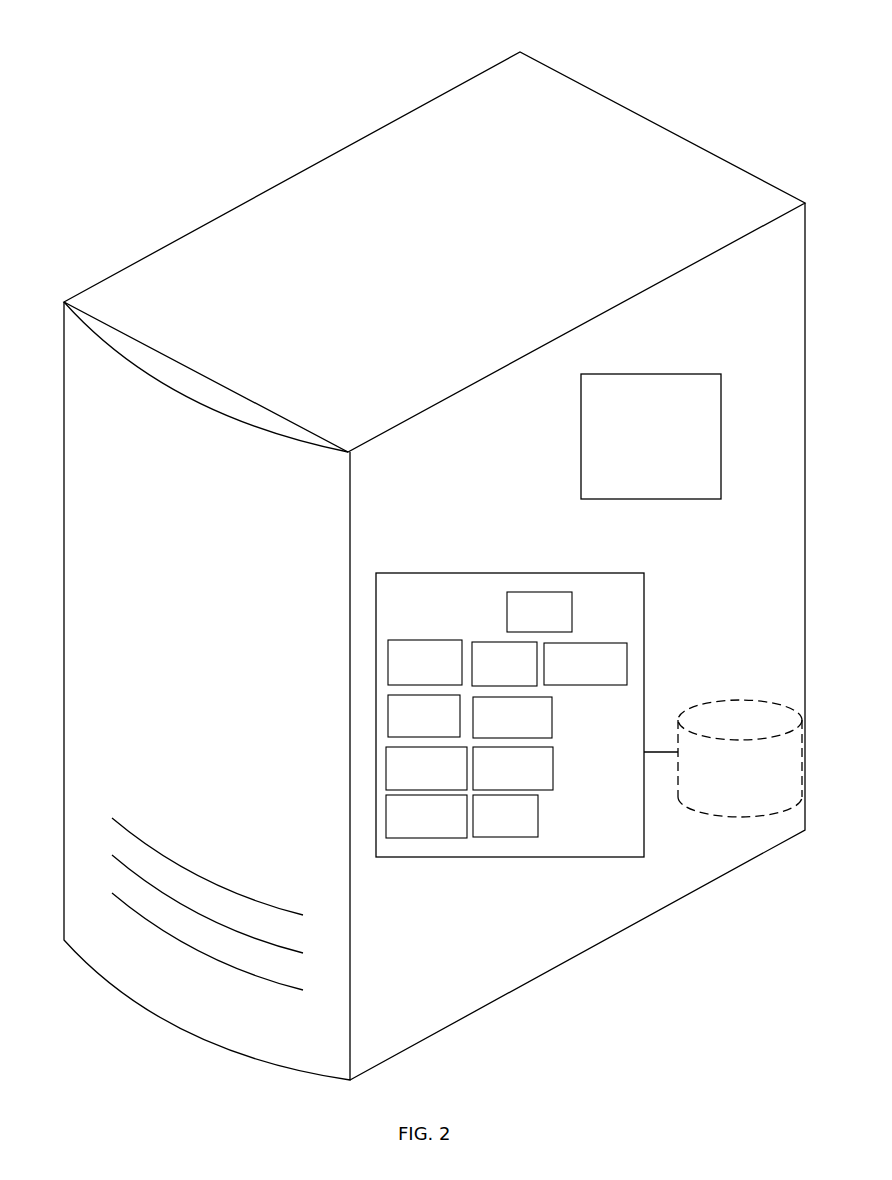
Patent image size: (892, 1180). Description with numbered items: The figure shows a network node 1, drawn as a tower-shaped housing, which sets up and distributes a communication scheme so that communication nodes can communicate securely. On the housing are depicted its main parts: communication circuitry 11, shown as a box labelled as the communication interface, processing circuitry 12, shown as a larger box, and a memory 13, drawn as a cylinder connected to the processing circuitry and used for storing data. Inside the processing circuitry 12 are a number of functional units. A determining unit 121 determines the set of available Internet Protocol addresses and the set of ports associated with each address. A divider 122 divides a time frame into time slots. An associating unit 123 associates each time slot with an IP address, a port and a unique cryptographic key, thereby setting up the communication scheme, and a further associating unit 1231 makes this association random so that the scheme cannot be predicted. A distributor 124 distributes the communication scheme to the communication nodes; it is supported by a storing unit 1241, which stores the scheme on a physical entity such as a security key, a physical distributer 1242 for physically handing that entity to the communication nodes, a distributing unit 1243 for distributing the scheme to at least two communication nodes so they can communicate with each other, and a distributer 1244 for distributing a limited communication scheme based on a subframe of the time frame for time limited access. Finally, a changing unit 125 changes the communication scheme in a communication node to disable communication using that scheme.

The network node 1 is at (432, 50).
The communication circuitry 11 is at (651, 436).
The processing circuitry 12 is at (510, 715).
The determining unit 121 is at (539, 612).
The divider 122 is at (425, 662).
The associating unit 123 is at (504, 664).
The associating unit 1231 is at (585, 664).
The distributor 124 is at (424, 716).
The storing unit 1241 is at (512, 717).
The physical distributer 1242 is at (426, 768).
The distributing unit 1243 is at (513, 768).
The distributer 1244 is at (426, 816).
The changing unit 125 is at (505, 816).
The memory 13 is at (723, 758).